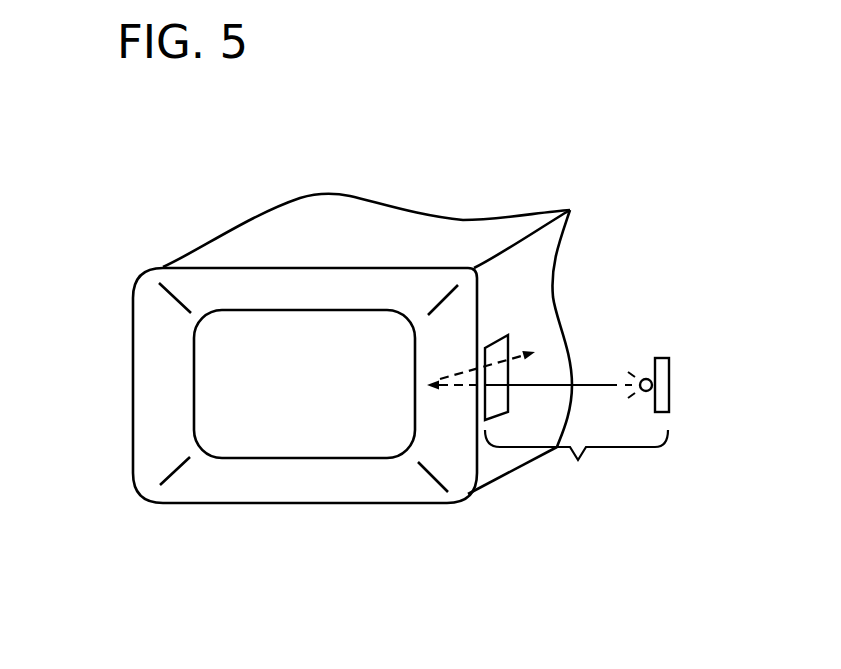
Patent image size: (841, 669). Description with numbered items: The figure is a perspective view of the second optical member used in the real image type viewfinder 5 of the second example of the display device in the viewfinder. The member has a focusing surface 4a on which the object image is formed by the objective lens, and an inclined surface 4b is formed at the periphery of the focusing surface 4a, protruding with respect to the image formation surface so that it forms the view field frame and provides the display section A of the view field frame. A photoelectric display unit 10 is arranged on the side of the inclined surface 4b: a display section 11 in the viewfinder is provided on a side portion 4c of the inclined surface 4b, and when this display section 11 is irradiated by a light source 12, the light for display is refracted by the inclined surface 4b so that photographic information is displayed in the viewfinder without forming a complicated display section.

The real image type viewfinder 5 is at (128, 258).
The focusing surface 4a is at (340, 333).
The inclined surface 4b is at (153, 368).
The side portion 4c is at (495, 337).
The photoelectric display unit 10 is at (590, 440).
The display section in the viewfinder 11 is at (497, 410).
The light source 12 is at (669, 384).
The display section of the view field frame A is at (116, 430).